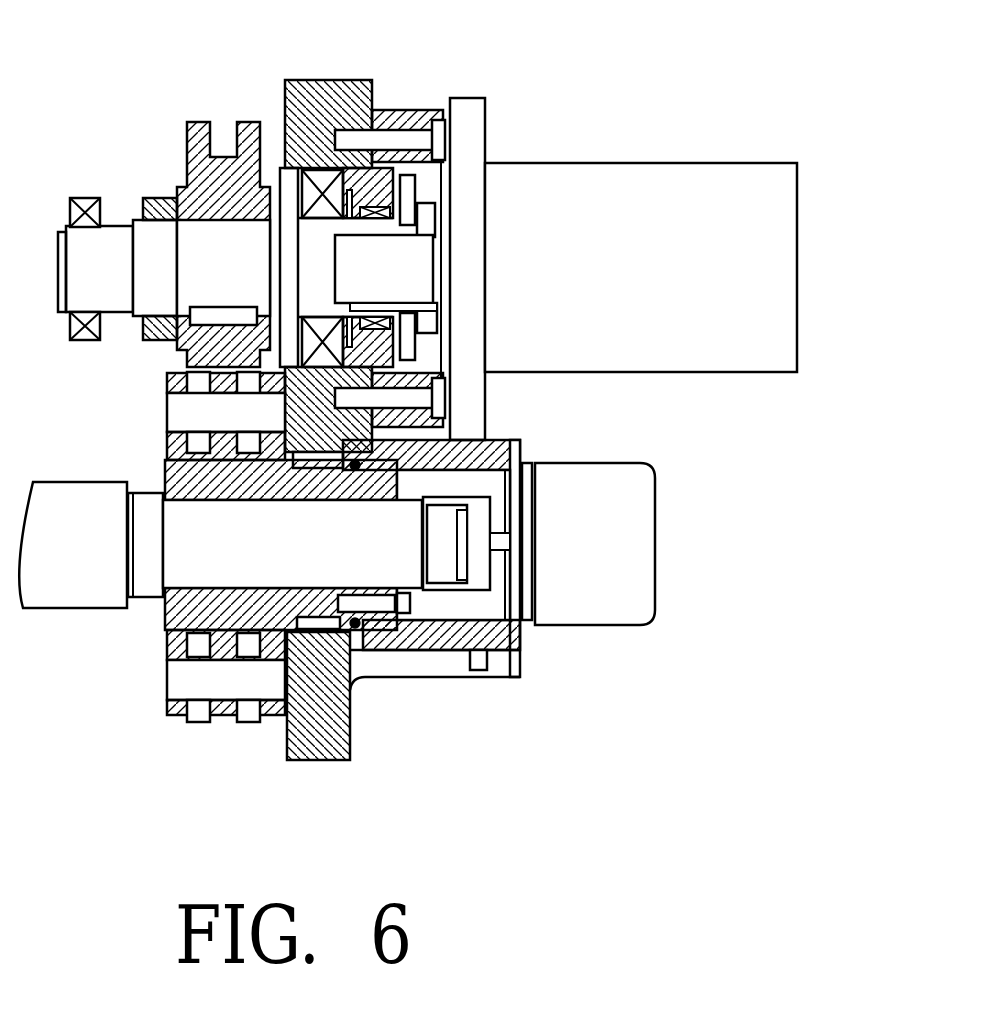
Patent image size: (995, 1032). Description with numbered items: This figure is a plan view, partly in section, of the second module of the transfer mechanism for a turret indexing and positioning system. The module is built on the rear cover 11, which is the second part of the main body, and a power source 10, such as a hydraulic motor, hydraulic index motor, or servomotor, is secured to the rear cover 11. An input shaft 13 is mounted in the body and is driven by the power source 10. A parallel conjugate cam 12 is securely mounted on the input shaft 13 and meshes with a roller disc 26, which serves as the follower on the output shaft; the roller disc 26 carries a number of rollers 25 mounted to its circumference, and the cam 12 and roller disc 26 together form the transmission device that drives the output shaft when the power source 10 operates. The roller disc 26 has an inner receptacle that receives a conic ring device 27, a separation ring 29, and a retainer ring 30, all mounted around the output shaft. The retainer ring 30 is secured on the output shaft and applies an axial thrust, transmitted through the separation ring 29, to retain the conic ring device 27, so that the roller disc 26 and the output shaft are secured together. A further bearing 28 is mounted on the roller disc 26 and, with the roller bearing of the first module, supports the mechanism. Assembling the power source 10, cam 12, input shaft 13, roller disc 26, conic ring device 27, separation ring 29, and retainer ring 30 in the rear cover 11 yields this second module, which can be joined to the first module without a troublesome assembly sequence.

The power source 10 is at (565, 195).
The rear cover 11 is at (332, 108).
The parallel conjugate cam 12 is at (228, 165).
The input shaft 13 is at (150, 250).
The rollers 25 is at (203, 715).
The roller disc 26 is at (257, 595).
The conic ring device 27 is at (353, 678).
The bearing 28 is at (366, 612).
The separation ring 29 is at (383, 588).
The retainer ring 30 is at (488, 442).